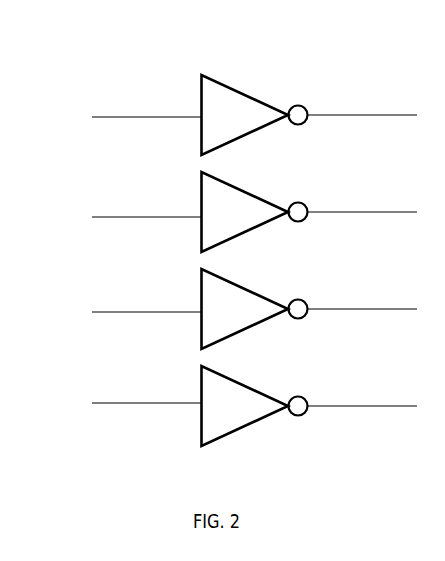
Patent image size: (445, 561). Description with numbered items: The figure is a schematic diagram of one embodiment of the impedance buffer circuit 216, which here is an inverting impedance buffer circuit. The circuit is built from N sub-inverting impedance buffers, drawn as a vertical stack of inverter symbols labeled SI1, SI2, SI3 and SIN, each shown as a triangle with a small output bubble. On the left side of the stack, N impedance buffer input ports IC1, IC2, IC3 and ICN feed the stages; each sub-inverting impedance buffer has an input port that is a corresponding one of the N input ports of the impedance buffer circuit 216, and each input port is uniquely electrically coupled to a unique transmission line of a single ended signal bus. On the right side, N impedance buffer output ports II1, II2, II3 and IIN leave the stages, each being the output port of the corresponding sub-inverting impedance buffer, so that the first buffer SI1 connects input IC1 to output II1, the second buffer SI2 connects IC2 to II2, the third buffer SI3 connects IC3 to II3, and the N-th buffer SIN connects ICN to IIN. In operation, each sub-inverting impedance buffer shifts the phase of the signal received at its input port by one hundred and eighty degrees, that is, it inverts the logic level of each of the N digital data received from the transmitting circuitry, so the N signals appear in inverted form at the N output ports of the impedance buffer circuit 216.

The impedance buffer circuit 216 is at (233, 26).
The sub-inverting impedance buffer SI1 is at (255, 115).
The sub-inverting impedance buffer SI2 is at (255, 212).
The sub-inverting impedance buffer SI3 is at (255, 309).
The sub-inverting impedance buffer SIN is at (255, 406).
The impedance buffer input port IC1 is at (110, 117).
The impedance buffer input port IC2 is at (110, 215).
The impedance buffer input port IC3 is at (100, 312).
The impedance buffer input port ICN is at (110, 402).
The impedance buffer output port II1 is at (392, 115).
The impedance buffer output port II2 is at (387, 213).
The impedance buffer output port II3 is at (380, 312).
The impedance buffer output port IIN is at (380, 407).